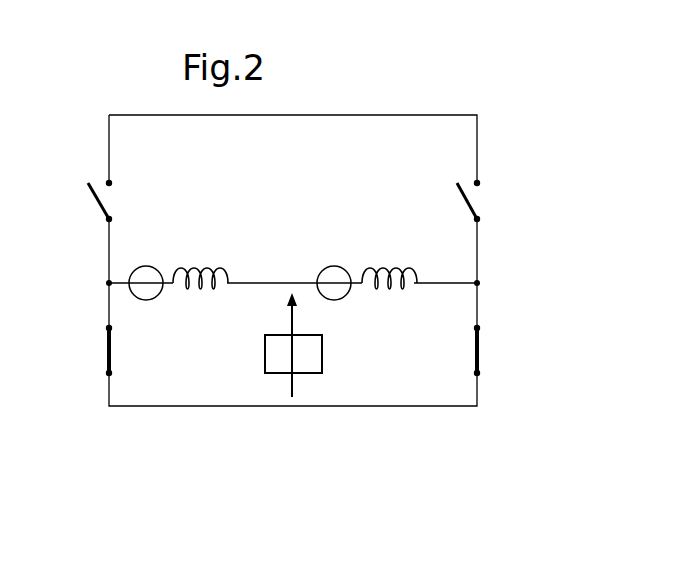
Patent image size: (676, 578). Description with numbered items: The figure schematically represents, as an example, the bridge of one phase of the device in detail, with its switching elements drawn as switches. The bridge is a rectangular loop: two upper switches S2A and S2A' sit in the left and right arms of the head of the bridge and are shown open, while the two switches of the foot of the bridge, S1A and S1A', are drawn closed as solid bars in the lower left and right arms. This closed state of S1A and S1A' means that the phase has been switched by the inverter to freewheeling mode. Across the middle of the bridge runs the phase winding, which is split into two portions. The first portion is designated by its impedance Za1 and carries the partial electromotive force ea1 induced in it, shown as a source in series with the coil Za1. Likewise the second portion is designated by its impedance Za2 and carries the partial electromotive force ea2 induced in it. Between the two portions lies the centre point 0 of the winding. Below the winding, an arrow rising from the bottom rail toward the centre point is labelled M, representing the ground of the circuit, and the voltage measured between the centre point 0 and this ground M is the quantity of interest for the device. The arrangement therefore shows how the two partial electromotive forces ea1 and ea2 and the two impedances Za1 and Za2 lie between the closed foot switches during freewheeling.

The switch S2A is at (78, 201).
The switch S2A' is at (492, 201).
The switch of the foot of the bridge S1A is at (83, 350).
The switch of the foot of the bridge S1A' is at (501, 350).
The partial electromotive force ea1 is at (148, 270).
The impedance of the first portion of the winding Za1 is at (200, 265).
The partial electromotive force ea2 is at (334, 270).
The impedance of the second portion of the winding Za2 is at (389, 265).
The ground of the circuit M is at (293, 363).
The centre point of the winding 0 is at (291, 277).